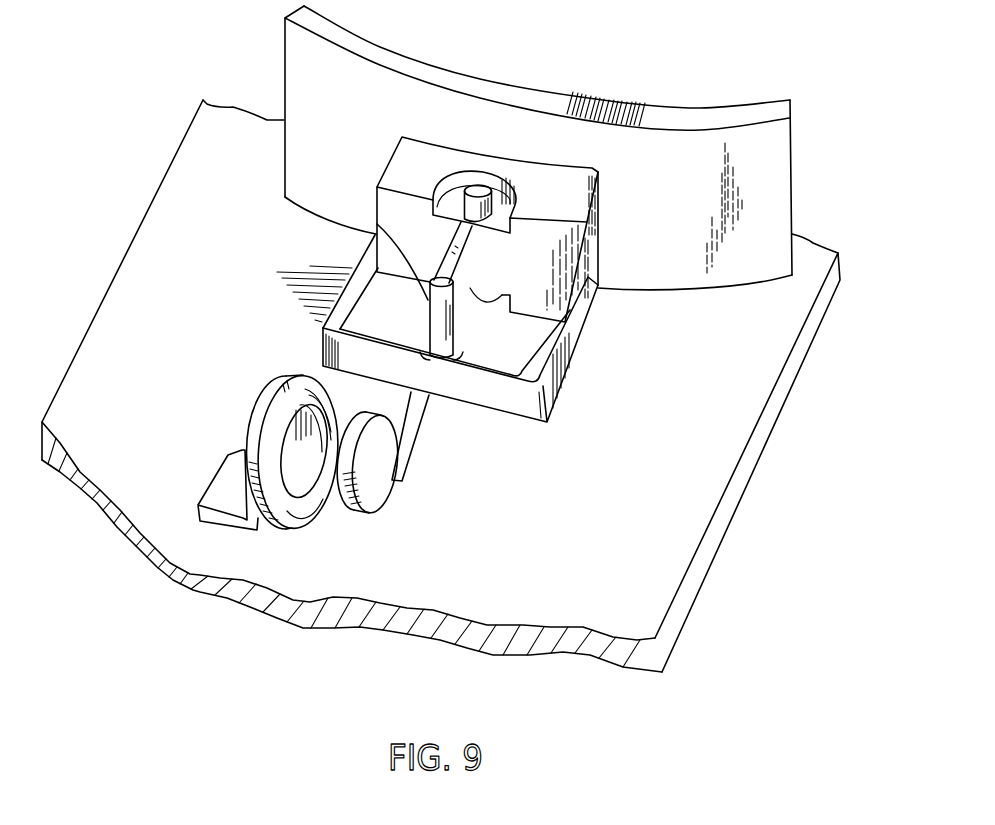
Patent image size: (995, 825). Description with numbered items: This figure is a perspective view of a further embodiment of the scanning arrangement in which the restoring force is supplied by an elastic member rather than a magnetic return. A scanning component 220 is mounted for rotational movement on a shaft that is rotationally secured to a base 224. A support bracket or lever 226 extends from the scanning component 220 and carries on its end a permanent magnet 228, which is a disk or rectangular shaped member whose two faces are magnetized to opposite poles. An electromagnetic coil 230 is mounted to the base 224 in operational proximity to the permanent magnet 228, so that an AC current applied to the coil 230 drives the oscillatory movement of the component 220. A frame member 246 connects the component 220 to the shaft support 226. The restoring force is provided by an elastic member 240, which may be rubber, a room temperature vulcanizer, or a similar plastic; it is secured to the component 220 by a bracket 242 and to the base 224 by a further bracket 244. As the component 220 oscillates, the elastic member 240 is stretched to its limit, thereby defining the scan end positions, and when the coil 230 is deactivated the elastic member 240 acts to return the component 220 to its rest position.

The scanning component 220 is at (560, 90).
The base 224 is at (735, 504).
The support bracket or lever 226 is at (425, 417).
The permanent magnet 228 is at (383, 480).
The electromagnetic coil 230 is at (267, 393).
The elastic member 240 is at (470, 270).
The bracket 242 is at (530, 200).
The bracket 244 is at (377, 224).
The frame member 246 is at (565, 322).